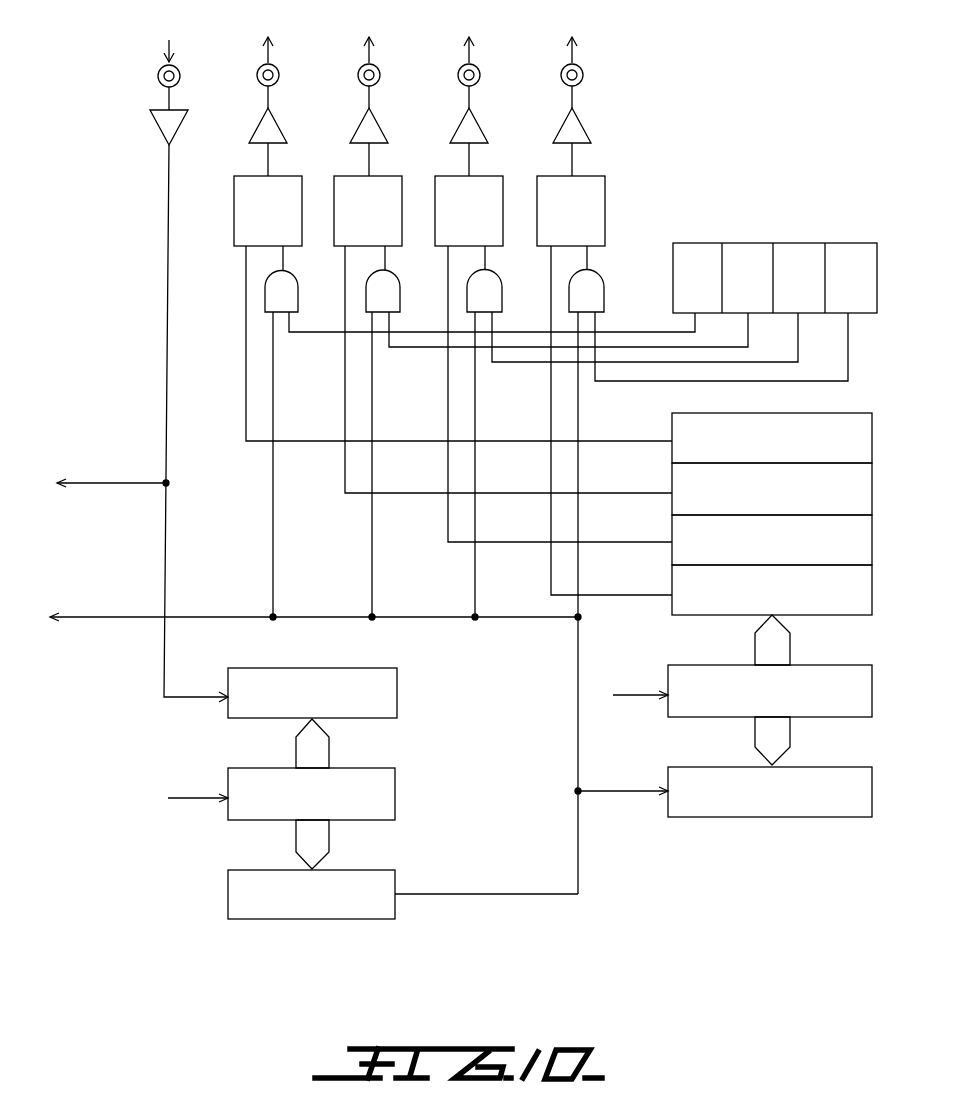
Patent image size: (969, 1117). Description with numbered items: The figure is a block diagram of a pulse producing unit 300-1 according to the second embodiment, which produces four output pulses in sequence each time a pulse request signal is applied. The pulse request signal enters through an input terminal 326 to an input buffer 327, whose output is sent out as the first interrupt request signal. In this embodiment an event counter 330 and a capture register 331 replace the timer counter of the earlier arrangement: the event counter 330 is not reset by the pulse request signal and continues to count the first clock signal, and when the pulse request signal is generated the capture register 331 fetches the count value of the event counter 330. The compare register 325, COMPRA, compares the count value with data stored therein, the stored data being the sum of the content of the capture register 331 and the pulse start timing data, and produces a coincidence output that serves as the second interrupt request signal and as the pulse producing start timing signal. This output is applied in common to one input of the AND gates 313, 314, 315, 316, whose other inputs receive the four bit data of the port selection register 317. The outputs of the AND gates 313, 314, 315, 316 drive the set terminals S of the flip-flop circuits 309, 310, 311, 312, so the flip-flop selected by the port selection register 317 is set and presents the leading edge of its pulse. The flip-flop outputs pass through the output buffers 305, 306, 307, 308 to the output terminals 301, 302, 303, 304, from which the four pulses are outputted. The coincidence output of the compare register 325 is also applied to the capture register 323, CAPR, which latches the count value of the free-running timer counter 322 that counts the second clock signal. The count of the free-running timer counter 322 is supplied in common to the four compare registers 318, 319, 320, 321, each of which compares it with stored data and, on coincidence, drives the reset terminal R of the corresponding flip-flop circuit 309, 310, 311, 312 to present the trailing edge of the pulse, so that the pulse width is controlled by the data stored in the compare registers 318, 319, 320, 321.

The pulse producing unit 300-1 is at (841, 167).
The output terminal 301 is at (291, 62).
The output terminal 302 is at (379, 68).
The output terminal 303 is at (479, 68).
The output terminal 304 is at (583, 73).
The output buffer 305 is at (274, 123).
The output buffer 306 is at (375, 123).
The output buffer 307 is at (476, 123).
The output buffer 308 is at (580, 123).
The flip-flop circuit 309 is at (285, 177).
The flip-flop circuit 310 is at (388, 177).
The flip-flop circuit 311 is at (490, 177).
The flip-flop circuit 312 is at (595, 177).
The AND gate 313 is at (291, 279).
The AND gate 314 is at (392, 279).
The AND gate 315 is at (495, 279).
The AND gate 316 is at (598, 279).
The port selection register 317 is at (866, 243).
The compare register 318 is at (667, 452).
The compare register 319 is at (667, 510).
The compare register 320 is at (667, 548).
The compare register 321 is at (698, 620).
The free-running timer counter 322 is at (707, 718).
The capture register 323 is at (732, 817).
The compare register 325 is at (377, 919).
The input terminal 326 is at (127, 73).
The input buffer 327 is at (128, 130).
The event counter 330 is at (395, 793).
The capture register 331 is at (397, 697).